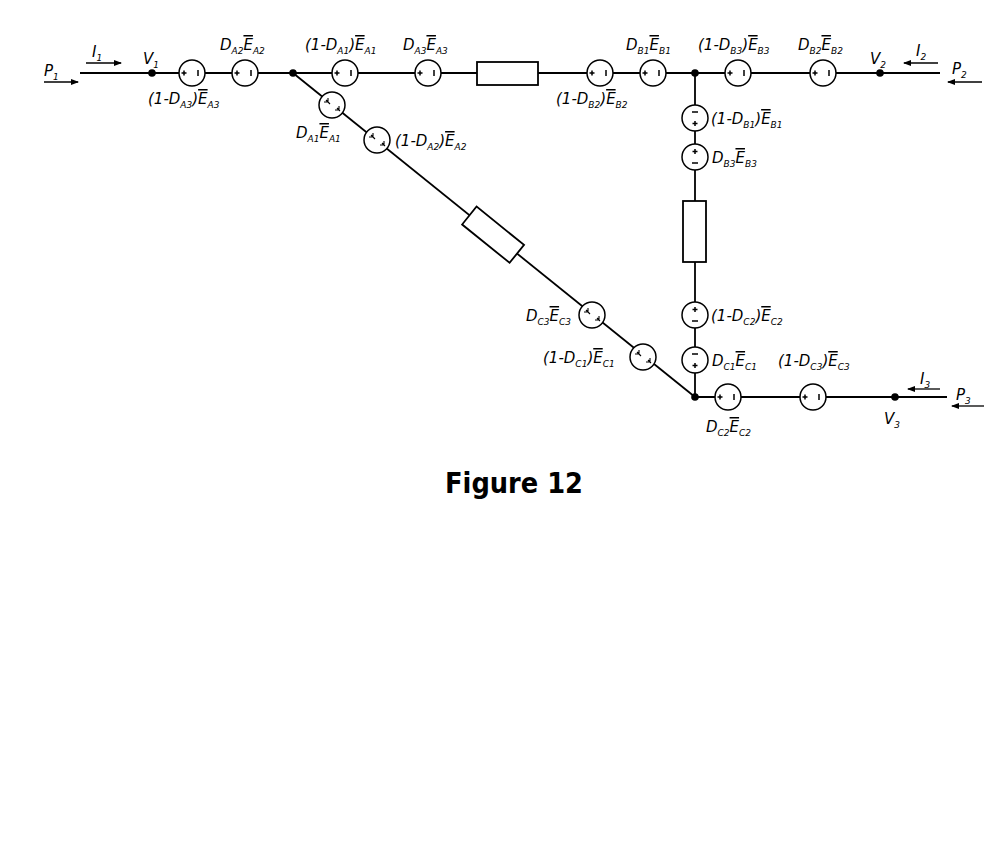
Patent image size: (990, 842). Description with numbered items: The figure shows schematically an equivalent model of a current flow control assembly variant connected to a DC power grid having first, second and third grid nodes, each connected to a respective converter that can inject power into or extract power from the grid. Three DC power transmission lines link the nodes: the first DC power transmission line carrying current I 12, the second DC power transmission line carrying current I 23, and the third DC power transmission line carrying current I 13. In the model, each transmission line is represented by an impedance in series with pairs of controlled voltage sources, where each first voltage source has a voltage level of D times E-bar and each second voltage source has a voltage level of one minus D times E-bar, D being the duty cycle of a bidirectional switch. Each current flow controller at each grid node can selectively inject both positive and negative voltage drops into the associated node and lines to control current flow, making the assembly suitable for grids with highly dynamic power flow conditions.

The line current I12 branch impedance 12 is at (524, 56).
The line current I13 branch impedance 13 is at (490, 262).
The line current I23 branch impedance 23 is at (712, 213).